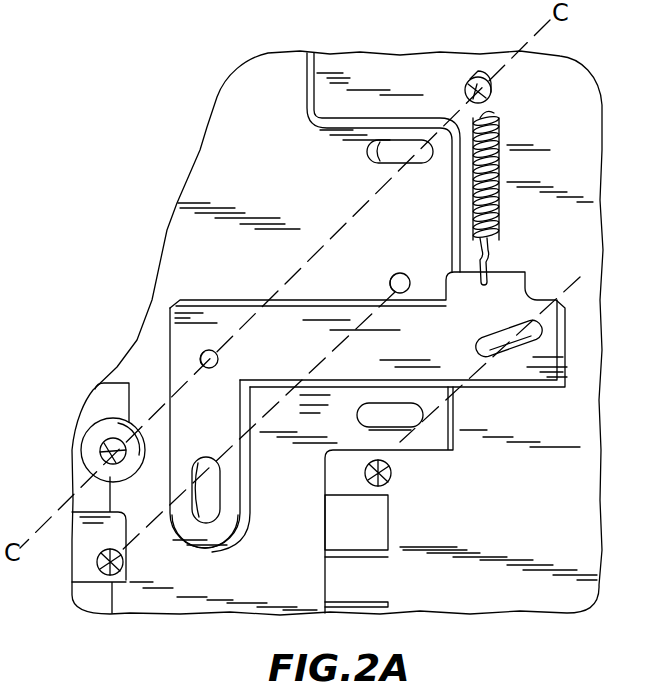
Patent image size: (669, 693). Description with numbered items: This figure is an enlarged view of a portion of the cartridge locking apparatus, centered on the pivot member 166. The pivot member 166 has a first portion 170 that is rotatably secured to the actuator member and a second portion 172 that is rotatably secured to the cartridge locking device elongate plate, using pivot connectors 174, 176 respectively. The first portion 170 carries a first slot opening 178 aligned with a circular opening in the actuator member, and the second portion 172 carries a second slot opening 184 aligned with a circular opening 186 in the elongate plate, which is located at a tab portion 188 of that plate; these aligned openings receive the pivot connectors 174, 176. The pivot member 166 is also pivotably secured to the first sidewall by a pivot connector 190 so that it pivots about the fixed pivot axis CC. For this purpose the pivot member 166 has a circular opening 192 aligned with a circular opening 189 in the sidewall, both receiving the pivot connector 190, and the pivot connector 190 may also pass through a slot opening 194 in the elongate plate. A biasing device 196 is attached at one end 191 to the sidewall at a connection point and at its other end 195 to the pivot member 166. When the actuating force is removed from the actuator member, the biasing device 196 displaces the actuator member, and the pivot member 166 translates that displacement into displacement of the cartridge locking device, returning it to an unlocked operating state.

The pivot member 166 is at (188, 282).
The first portion 170 is at (553, 377).
The second portion 172 is at (212, 553).
The pivot connector 174 is at (390, 479).
The pivot connector 176 is at (97, 563).
The first slot opening 178 is at (535, 336).
The second slot opening 184 is at (214, 488).
The circular opening 186 is at (394, 273).
The tab portion 188 is at (352, 109).
The circular opening 189 is at (480, 77).
The pivot connector 190 is at (90, 437).
The end 191 is at (491, 114).
The circular opening 192 is at (219, 358).
The slot opening 194 is at (370, 151).
The end 195 is at (488, 265).
The biasing device 196 is at (501, 168).